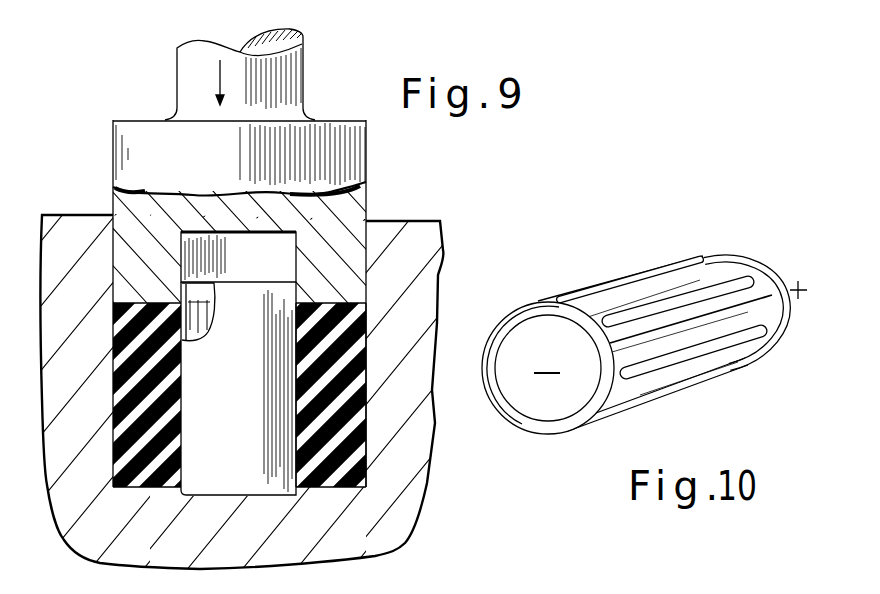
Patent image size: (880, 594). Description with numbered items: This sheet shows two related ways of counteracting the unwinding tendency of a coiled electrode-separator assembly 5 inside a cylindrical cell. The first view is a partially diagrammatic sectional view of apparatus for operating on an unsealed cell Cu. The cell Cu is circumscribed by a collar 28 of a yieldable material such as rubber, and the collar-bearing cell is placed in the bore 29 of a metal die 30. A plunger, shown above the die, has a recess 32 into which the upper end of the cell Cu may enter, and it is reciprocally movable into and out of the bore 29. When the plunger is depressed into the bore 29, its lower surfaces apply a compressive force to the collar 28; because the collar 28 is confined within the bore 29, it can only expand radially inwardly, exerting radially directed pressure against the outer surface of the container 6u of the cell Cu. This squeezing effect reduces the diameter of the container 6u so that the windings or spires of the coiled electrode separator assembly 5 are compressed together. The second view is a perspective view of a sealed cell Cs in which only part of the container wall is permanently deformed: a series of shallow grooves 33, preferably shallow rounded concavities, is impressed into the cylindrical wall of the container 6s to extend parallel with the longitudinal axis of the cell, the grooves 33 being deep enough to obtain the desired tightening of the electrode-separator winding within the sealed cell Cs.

In FIG. 9, the recess 32 is at (273, 253).
In FIG. 9, the container 6u is at (178, 290).
In FIG. 9, the coiled electrode separator assembly 5 is at (204, 323).
In FIG. 9, the collar 28 is at (340, 353).
In FIG. 9, the bore 29 is at (354, 413).
In FIG. 9, the metal die 30 is at (400, 477).
In FIG. 9, the unsealed cell Cu is at (240, 447).
In FIG. 10, the sealed cell Cs is at (530, 355).
In FIG. 10, the grooves 33 is at (675, 355).
In FIG. 10, the container 6s is at (654, 391).